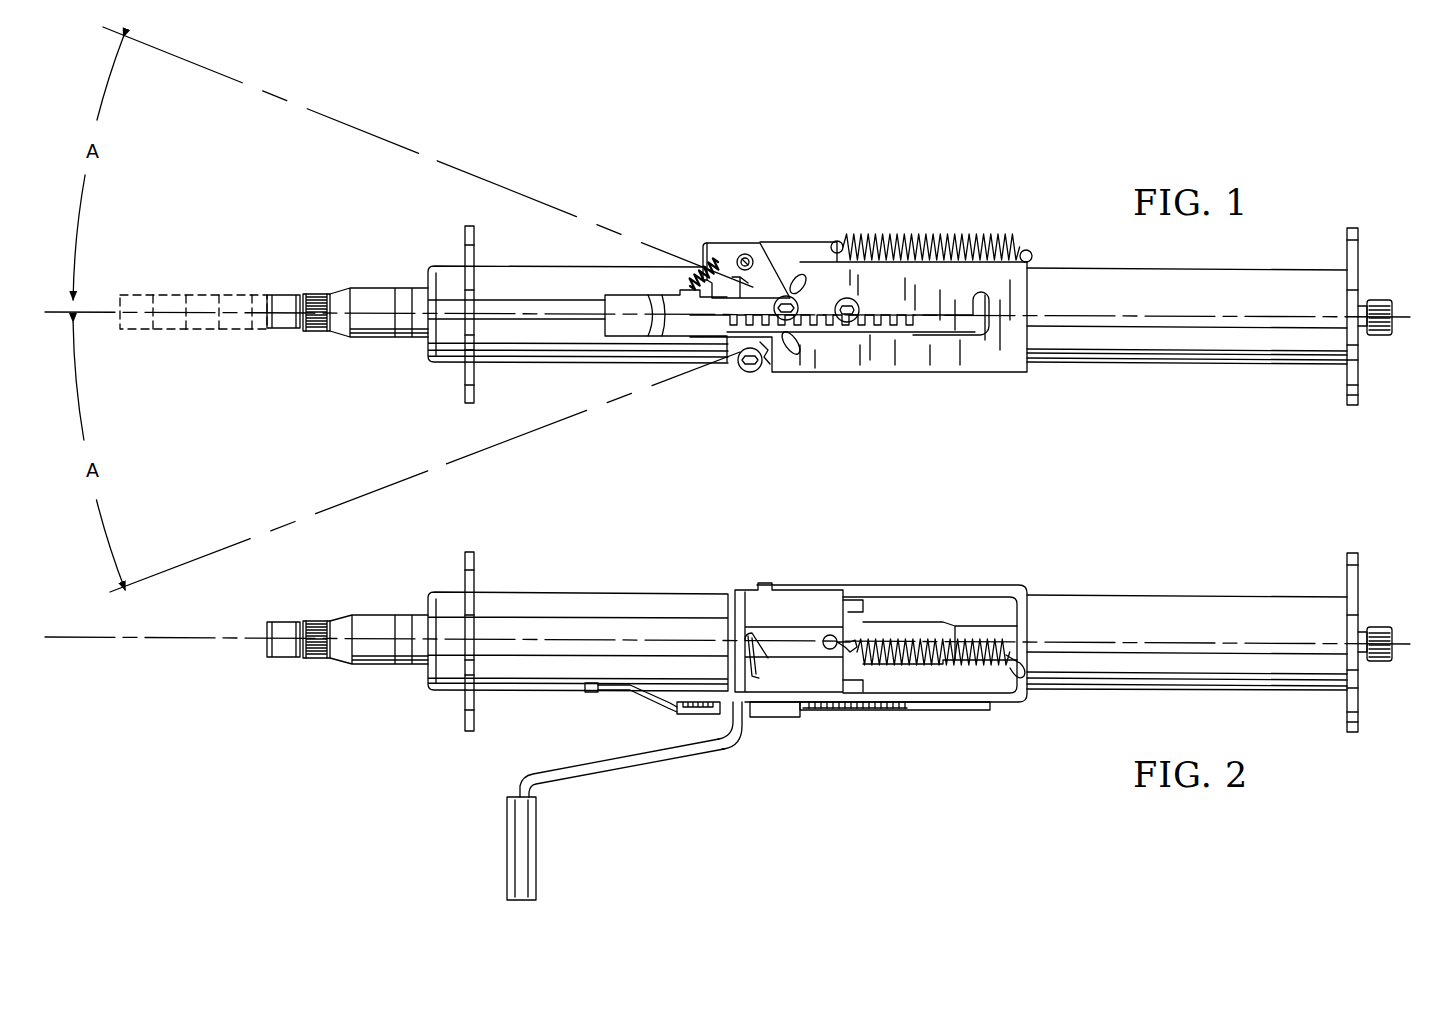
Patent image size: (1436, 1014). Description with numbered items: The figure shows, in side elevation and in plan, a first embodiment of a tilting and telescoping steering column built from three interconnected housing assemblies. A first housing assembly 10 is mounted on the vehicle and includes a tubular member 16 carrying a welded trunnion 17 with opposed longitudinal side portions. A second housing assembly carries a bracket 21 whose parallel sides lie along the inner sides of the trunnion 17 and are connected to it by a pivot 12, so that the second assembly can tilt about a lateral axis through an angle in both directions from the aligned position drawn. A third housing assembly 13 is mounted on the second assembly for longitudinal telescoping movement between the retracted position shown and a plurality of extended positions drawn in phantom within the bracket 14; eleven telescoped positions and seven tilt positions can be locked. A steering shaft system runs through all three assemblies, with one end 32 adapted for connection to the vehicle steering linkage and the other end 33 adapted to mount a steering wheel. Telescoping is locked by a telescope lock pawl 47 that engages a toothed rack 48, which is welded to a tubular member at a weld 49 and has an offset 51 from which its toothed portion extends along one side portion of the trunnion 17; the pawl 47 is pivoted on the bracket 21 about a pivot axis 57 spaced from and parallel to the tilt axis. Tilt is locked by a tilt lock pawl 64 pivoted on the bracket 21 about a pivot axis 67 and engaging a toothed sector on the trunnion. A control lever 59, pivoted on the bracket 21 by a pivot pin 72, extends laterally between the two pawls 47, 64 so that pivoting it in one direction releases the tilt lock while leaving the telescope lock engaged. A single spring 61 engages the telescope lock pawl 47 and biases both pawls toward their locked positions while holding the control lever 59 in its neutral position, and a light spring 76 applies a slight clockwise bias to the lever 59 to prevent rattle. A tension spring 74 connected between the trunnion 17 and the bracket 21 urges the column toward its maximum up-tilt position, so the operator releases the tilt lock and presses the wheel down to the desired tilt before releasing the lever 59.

In FIG. 1, the first housing assembly 10 is at (1028, 192).
In FIG. 2, the first housing assembly 10 is at (1047, 551).
In FIG. 1, the pivot 12 is at (854, 302).
In FIG. 1, the third housing assembly 13 is at (590, 263).
In FIG. 2, the third housing assembly 13 is at (625, 592).
In FIG. 1, the bracket 14 is at (267, 280).
In FIG. 1, the tubular member 16 is at (1284, 268).
In FIG. 2, the tubular member 16 is at (1277, 592).
In FIG. 1, the trunnion 17 is at (915, 374).
In FIG. 2, the trunnion 17 is at (915, 580).
In FIG. 1, the bracket 21 is at (808, 242).
In FIG. 2, the bracket 21 is at (788, 602).
In FIG. 1, the end of steering shaft system 32 is at (1380, 300).
In FIG. 2, the end of steering shaft system 32 is at (1380, 627).
In FIG. 1, the other end of steering shaft system 33 is at (318, 298).
In FIG. 2, the other end of steering shaft system 33 is at (312, 621).
In FIG. 1, the telescope lock pawl 47 is at (768, 262).
In FIG. 2, the telescope lock pawl 47 is at (790, 712).
In FIG. 1, the toothed rack 48 is at (866, 336).
In FIG. 2, the toothed rack 48 is at (862, 710).
In FIG. 1, the weld 49 is at (625, 333).
In FIG. 2, the weld 49 is at (584, 692).
In FIG. 1, the offset 51 is at (660, 336).
In FIG. 2, the offset 51 is at (660, 708).
In FIG. 1, the pivot axis 57 is at (793, 316).
In FIG. 1, the control lever 59 is at (748, 254).
In FIG. 2, the control lever 59 is at (565, 773).
In FIG. 1, the spring 61 is at (705, 268).
In FIG. 1, the tilt lock pawl 64 is at (722, 254).
In FIG. 2, the tilt lock pawl 64 is at (738, 725).
In FIG. 1, the pivot axis 67 is at (750, 372).
In FIG. 2, the pivot pin 72 is at (748, 640).
In FIG. 1, the tension spring 74 is at (925, 242).
In FIG. 2, the tension spring 74 is at (1010, 670).
In FIG. 2, the light spring 76 is at (770, 642).